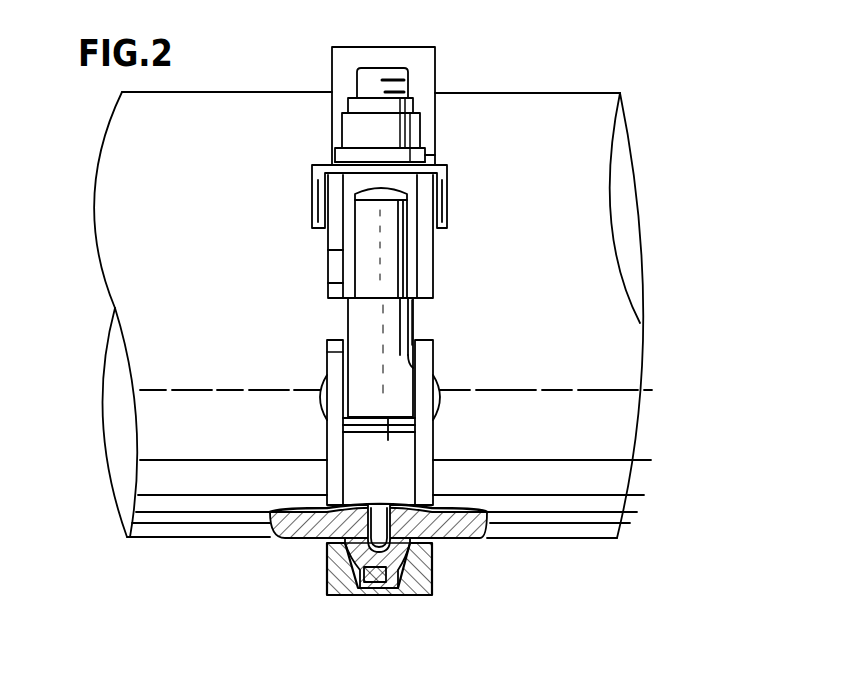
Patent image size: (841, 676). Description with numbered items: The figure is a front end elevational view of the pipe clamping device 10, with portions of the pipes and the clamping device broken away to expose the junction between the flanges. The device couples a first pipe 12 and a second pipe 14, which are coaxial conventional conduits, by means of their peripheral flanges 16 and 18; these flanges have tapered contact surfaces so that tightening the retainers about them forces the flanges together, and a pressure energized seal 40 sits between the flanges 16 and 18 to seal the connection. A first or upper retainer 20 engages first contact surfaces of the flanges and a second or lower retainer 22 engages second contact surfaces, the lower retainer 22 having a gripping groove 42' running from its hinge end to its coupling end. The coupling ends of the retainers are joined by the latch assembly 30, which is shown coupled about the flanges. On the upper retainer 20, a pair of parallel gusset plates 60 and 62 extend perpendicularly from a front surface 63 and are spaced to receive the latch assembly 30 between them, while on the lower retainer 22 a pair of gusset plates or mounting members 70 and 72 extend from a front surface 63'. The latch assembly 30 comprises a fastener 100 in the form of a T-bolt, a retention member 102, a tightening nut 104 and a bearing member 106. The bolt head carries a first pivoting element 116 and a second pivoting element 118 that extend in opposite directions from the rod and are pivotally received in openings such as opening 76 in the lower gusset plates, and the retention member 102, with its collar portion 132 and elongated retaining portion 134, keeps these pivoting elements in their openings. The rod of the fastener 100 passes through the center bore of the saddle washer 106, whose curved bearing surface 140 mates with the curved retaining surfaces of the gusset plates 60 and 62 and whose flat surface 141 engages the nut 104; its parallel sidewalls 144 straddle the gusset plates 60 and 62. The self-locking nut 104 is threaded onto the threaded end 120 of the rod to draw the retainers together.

The pipe clamping device 10 is at (276, 57).
The first pipe 12 is at (160, 212).
The second pipe 14 is at (595, 210).
The peripheral flange 16 is at (356, 565).
The peripheral flange 18 is at (410, 562).
The first retainer 20 is at (416, 48).
The second retainer 22 is at (420, 597).
The latch assembly 30 is at (416, 325).
The seal 40 is at (295, 538).
The gripping groove 42' is at (355, 611).
The gusset plate 60 is at (425, 262).
The gusset plate 62 is at (336, 258).
The front surface 63 is at (302, 292).
The front surface 63' is at (469, 368).
The gusset plate 70 is at (425, 442).
The gusset plate 72 is at (328, 353).
The opening 76 is at (343, 443).
The fastener 100 is at (370, 228).
The retention member 102 is at (364, 323).
The nut 104 is at (422, 122).
The bearing member 106 is at (449, 177).
The first pivoting element 116 is at (440, 403).
The second pivoting element 118 is at (320, 400).
The threaded end 120 is at (408, 83).
The collar portion 132 is at (412, 308).
The elongated retaining portion 134 is at (388, 430).
The curved bearing surface 140 is at (312, 163).
The flat surface 141 is at (441, 163).
The sidewalls 144 is at (318, 192).